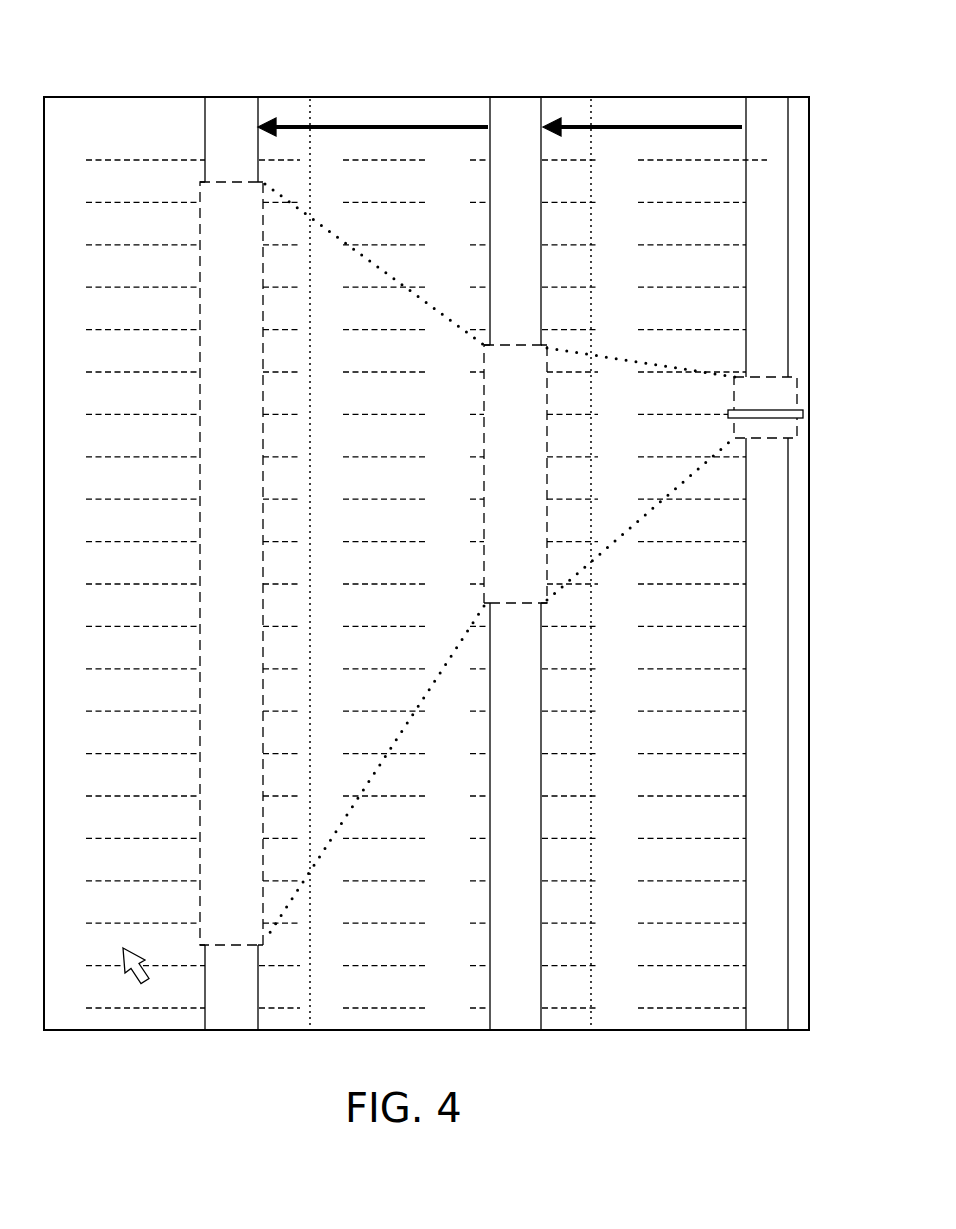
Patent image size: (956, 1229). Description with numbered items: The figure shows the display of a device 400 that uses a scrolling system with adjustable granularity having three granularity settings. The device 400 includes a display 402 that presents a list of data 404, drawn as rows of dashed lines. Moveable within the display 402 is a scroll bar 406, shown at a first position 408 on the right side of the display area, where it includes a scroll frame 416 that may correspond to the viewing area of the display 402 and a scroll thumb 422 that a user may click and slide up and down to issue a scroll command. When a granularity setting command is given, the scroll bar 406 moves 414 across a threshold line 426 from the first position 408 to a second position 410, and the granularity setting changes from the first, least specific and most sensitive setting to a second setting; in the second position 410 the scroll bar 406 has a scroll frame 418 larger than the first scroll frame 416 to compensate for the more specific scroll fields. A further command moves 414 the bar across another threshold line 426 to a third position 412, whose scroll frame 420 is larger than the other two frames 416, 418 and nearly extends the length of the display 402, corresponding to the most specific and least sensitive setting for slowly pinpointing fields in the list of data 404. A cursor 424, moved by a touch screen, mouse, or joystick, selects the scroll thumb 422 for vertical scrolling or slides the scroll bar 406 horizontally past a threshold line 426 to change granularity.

The device 400 is at (152, 48).
The display 402 is at (185, 97).
The list of data 404 is at (162, 329).
The scroll bar 406 is at (788, 215).
The first position 408 is at (762, 97).
The second position 410 is at (512, 97).
The third position 412 is at (232, 97).
The movement of the scroll bar 414 is at (358, 127).
The scroll frame 416 is at (793, 377).
The scroll frame 418 is at (547, 345).
The scroll frame 420 is at (265, 205).
The scroll thumb 422 is at (793, 410).
The cursor 424 is at (143, 985).
The threshold line 426 is at (310, 490).